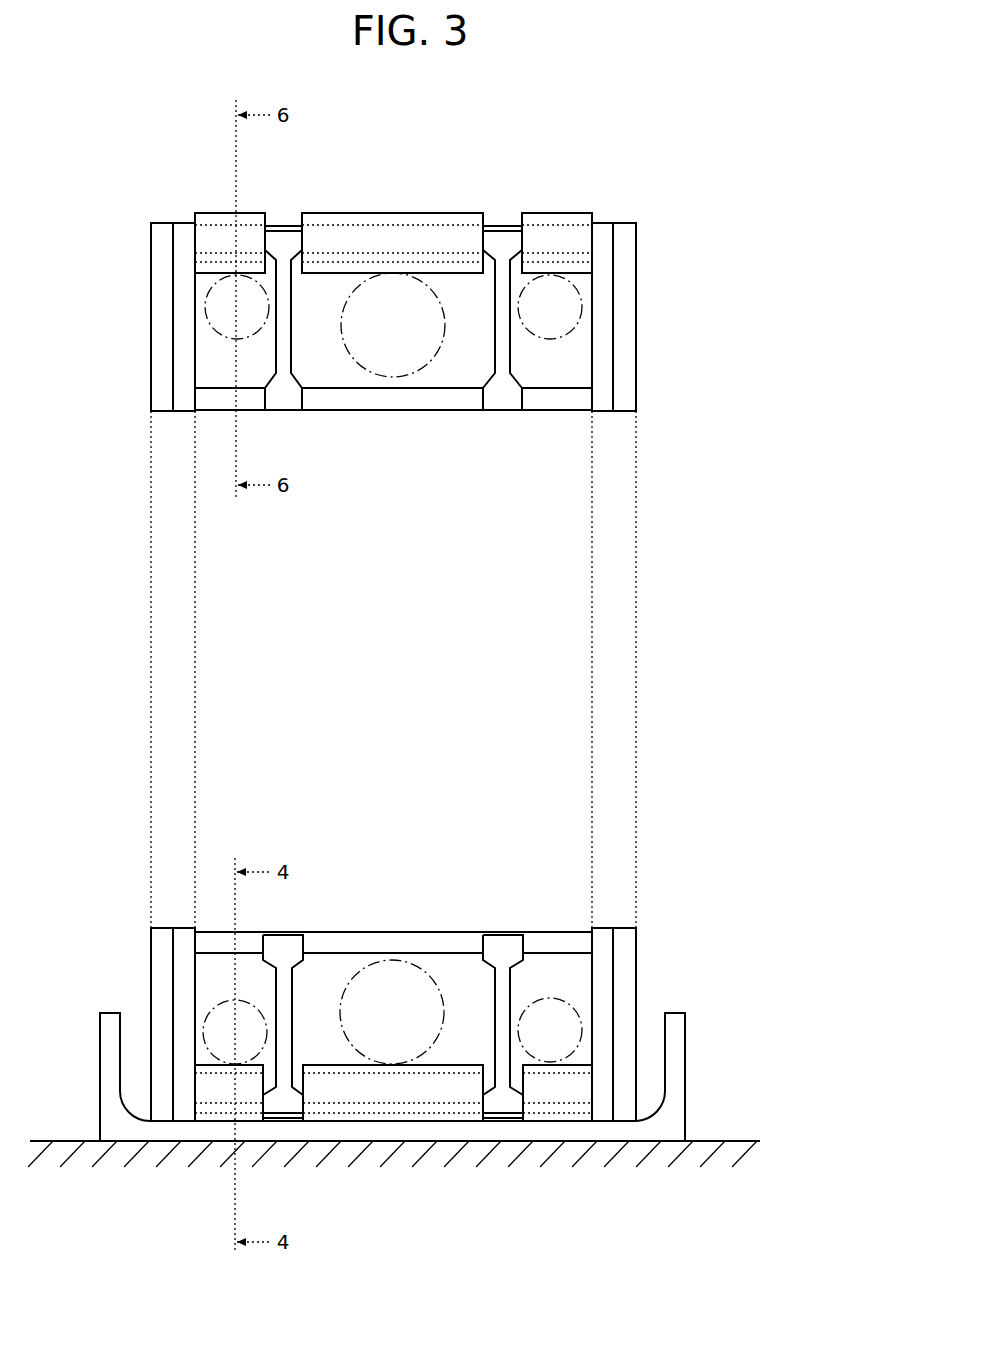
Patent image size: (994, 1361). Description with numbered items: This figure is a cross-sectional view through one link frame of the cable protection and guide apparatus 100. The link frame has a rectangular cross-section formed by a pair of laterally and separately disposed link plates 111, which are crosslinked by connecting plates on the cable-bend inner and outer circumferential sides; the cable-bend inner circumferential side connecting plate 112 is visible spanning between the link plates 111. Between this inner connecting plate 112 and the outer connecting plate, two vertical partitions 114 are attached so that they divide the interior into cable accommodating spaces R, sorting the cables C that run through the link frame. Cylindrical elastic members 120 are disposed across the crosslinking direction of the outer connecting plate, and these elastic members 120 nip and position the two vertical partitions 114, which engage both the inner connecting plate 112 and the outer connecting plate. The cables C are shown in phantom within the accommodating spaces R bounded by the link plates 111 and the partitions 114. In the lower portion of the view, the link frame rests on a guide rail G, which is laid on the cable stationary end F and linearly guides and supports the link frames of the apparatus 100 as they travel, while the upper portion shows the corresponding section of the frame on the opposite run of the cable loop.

The apparatus 100 is at (716, 174).
The link plates 111 is at (162, 235).
The cable-bend inner circumferential side connecting plate 112 is at (217, 402).
The vertical partitions 114 is at (285, 228).
The cylindrical elastic members 120 is at (213, 222).
The cables C is at (371, 262).
The cable accommodating spaces R is at (207, 362).
The guide rail G is at (675, 1120).
The cable stationary end F is at (740, 1195).